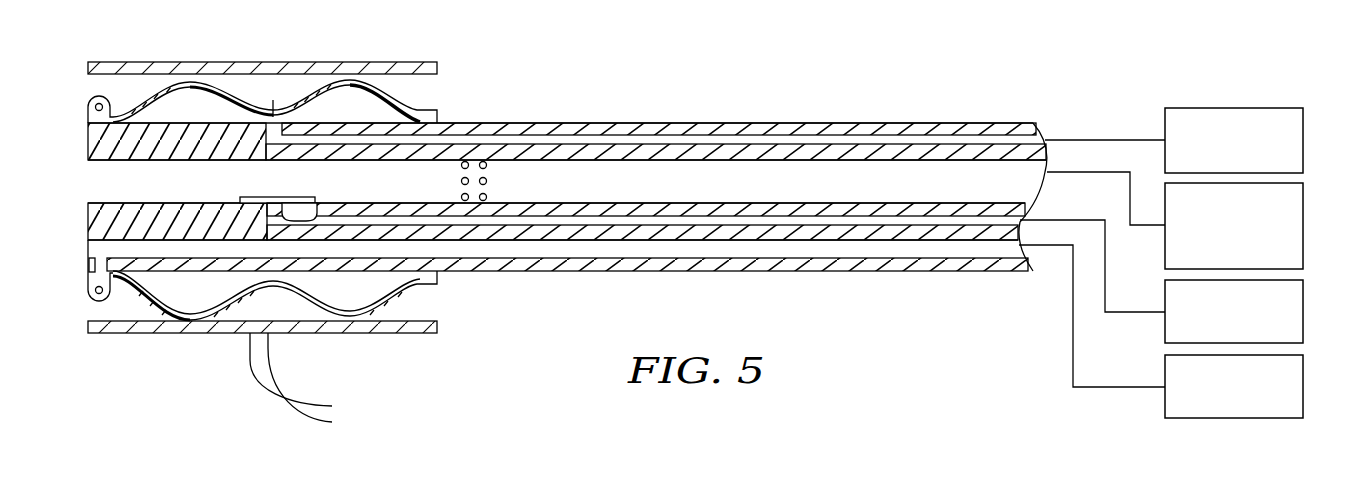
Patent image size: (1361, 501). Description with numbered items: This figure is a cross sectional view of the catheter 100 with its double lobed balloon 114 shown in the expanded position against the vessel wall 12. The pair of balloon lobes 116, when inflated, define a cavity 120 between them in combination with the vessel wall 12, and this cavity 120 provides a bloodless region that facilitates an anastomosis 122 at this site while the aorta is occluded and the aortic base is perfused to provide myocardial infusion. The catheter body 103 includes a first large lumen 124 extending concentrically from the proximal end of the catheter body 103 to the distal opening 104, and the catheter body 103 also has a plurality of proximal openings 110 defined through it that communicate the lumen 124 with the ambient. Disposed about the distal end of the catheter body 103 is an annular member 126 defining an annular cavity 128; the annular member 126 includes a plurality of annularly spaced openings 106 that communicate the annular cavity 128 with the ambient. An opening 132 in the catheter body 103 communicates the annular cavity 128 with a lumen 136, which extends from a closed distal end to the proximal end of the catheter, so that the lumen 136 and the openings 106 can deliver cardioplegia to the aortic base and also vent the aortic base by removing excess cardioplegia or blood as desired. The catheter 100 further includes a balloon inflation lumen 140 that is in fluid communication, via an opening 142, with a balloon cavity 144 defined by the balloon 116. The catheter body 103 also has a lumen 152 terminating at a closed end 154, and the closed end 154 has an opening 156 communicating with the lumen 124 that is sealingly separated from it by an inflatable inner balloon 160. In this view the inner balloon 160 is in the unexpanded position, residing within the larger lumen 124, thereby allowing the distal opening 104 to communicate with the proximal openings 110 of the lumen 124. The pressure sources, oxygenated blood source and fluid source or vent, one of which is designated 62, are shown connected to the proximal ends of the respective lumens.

The vessel wall 12 is at (425, 62).
The pressure source 62 is at (1303, 311).
The catheter 100 is at (875, 82).
The catheter body 103 is at (568, 122).
The distal opening 104 is at (97, 192).
The annularly spaced openings 106 is at (93, 108).
The proximal openings 110 is at (488, 166).
The double lobed balloon 114 is at (422, 99).
The balloon lobes 116 is at (168, 102).
The cavity 120 is at (260, 78).
The anastomosis 122 is at (303, 399).
The first large lumen 124 is at (785, 168).
The annular member 126 is at (88, 100).
The annular cavity 128 is at (92, 297).
The opening 132 is at (99, 260).
The lumen 136 is at (627, 243).
The balloon inflation lumen 140 is at (640, 140).
The opening 142 is at (277, 105).
The balloon cavity 144 is at (172, 100).
The lumen 152 is at (722, 220).
The closed end 154 is at (257, 222).
The opening 156 is at (308, 212).
The inflatable inner balloon 160 is at (302, 200).